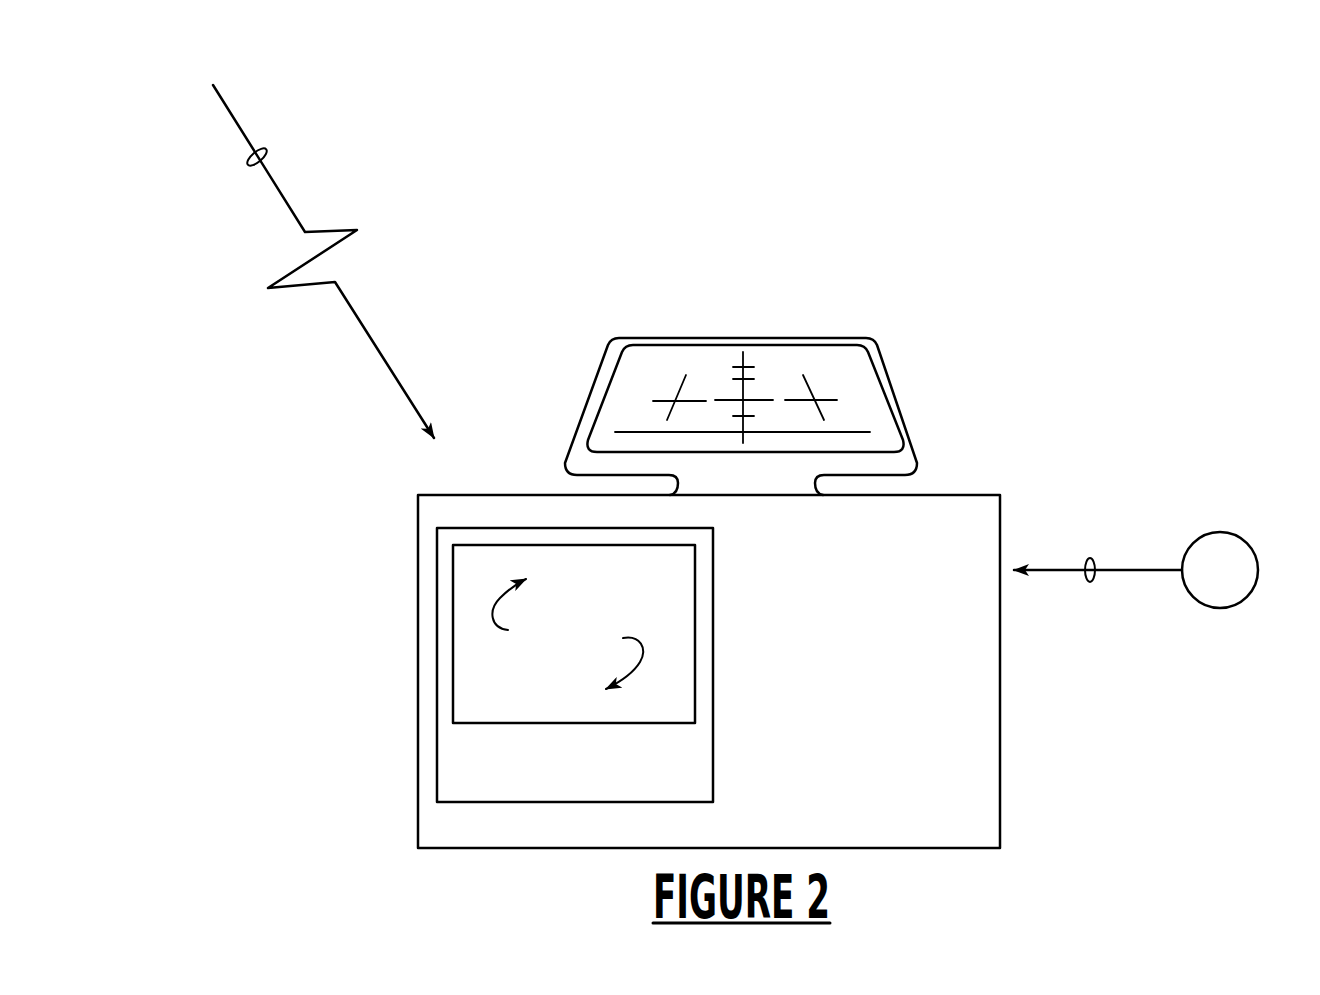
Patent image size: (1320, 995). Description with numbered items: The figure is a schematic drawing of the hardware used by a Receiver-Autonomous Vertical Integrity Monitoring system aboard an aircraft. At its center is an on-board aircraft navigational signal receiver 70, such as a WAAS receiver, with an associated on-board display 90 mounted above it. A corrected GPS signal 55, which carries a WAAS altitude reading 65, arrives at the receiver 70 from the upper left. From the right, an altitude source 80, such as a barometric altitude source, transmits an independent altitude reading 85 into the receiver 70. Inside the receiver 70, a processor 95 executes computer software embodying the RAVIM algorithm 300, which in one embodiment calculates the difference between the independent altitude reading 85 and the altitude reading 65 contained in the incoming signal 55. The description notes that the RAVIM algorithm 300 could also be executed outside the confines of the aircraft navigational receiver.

The corrected GPS signal 55 is at (316, 243).
The WAAS altitude reading 65 is at (258, 149).
The aircraft navigational signal receiver 70 is at (1047, 801).
The altitude source 80 is at (1220, 520).
The independent altitude reading 85 is at (1088, 557).
The on-board display 90 is at (950, 375).
The processor 95 is at (508, 763).
The RAVIM algorithm 300 is at (574, 634).